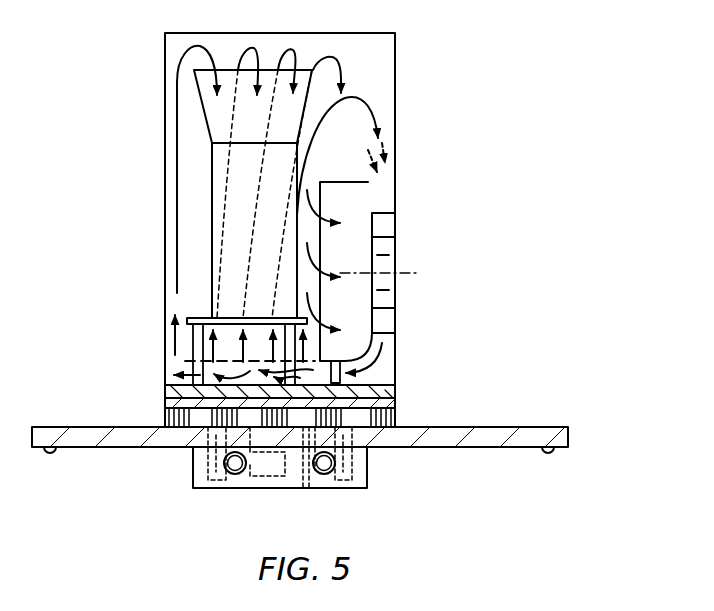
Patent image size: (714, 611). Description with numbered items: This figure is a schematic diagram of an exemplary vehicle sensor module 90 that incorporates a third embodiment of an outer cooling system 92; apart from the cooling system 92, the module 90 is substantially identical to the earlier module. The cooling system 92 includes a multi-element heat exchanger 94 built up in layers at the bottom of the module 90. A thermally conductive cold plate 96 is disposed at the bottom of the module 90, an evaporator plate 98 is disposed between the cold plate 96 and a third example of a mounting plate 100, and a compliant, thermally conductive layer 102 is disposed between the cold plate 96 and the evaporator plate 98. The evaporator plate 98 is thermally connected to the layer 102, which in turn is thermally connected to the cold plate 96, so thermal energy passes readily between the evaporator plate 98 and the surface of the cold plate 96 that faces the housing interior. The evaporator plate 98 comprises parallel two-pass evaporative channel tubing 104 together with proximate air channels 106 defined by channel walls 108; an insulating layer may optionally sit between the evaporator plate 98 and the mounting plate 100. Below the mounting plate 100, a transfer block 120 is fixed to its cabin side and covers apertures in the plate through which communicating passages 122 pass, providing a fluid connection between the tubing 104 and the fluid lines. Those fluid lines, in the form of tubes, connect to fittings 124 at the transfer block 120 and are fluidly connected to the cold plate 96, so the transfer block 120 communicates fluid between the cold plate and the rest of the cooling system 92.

The vehicle sensor module 90 is at (492, 197).
The cooling system 92 is at (445, 400).
The multi-element heat exchanger 94 is at (160, 401).
The cold plate 96 is at (165, 388).
The evaporator plate 98 is at (266, 434).
The mounting plate 100 is at (515, 427).
The compliant, thermally conductive layer 102 is at (397, 405).
The evaporative channel tubing 104 is at (217, 412).
The air channels 106 is at (343, 397).
The channel walls 108 is at (346, 394).
The transfer block 120 is at (193, 468).
The communicating passages 122 is at (303, 488).
The fittings 124 is at (237, 476).